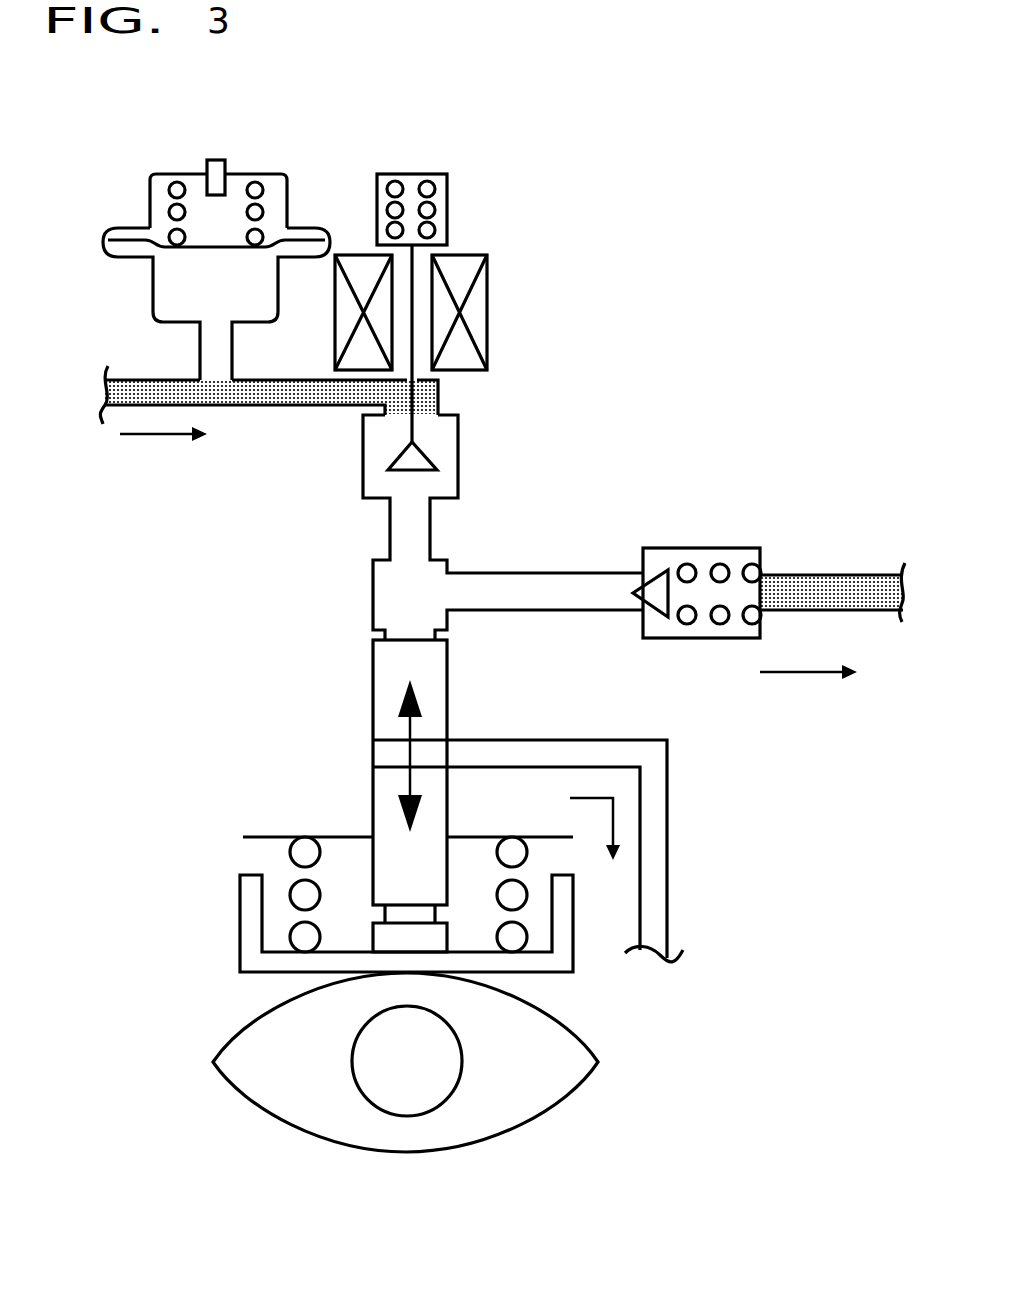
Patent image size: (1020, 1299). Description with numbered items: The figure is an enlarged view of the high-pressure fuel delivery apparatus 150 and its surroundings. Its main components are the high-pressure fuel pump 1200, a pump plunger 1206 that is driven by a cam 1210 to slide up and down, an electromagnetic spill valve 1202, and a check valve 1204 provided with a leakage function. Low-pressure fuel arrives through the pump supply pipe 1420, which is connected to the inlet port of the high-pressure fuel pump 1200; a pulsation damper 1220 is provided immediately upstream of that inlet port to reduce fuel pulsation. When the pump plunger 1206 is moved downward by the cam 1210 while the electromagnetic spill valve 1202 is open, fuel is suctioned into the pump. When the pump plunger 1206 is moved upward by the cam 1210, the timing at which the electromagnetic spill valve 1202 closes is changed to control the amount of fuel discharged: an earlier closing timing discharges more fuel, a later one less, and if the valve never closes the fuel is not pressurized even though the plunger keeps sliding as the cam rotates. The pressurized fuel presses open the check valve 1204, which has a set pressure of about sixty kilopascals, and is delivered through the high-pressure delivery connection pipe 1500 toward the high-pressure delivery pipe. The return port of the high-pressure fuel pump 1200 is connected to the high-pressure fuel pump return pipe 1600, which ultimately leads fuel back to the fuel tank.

The high-pressure fuel delivery apparatus 150 is at (669, 163).
The pulsation damper 1220 is at (263, 166).
The pump supply pipe 1420 is at (273, 397).
The electromagnetic spill valve 1202 is at (499, 292).
The high-pressure fuel pump 1200 is at (514, 527).
The check valve 1204 is at (700, 548).
The high-pressure delivery connection pipe 1500 is at (818, 577).
The pump plunger 1206 is at (338, 797).
The high-pressure fuel pump return pipe 1600 is at (655, 815).
The cam 1210 is at (550, 1118).